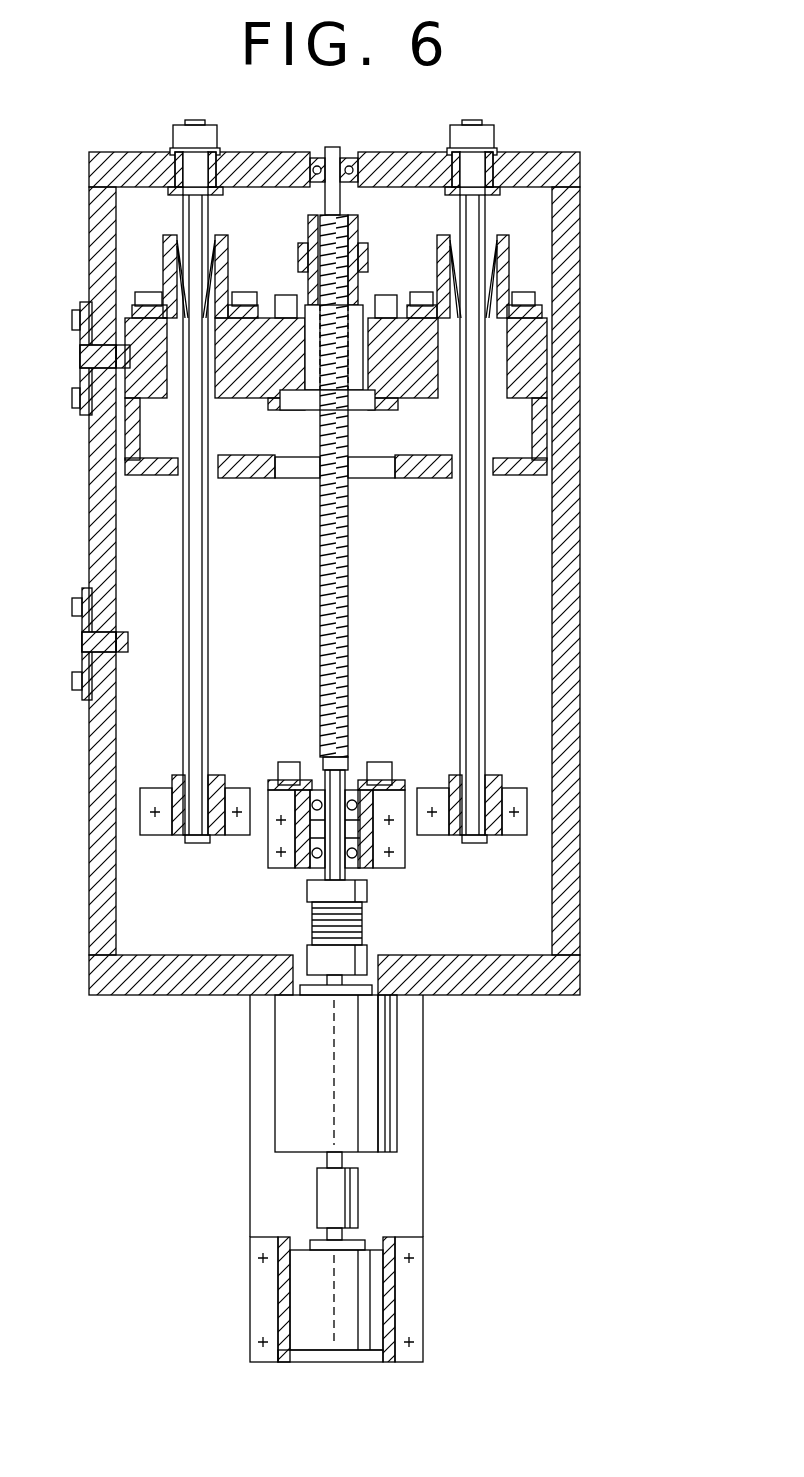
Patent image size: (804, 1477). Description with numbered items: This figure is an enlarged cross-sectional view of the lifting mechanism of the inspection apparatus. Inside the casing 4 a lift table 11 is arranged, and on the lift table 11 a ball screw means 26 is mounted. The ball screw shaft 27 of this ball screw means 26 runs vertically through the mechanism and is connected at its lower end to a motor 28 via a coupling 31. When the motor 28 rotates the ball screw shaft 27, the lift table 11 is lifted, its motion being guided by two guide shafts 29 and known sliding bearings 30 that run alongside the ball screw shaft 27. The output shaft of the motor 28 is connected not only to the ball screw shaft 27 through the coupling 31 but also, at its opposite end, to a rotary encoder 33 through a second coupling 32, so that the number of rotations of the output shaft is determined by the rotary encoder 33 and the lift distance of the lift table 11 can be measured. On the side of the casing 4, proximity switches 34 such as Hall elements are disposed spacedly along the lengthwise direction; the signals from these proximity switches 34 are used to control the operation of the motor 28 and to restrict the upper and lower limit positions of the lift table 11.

The casing 4 is at (90, 768).
The lift table 11 is at (535, 353).
The ball screw means 26 is at (343, 385).
The ball screw shaft 27 is at (320, 545).
The motor 28 is at (397, 1075).
The guide shaft 29 is at (207, 656).
The sliding bearing 30 is at (163, 262).
The coupling 31 is at (307, 922).
The coupling 32 is at (358, 1192).
The rotary encoder 33 is at (370, 1293).
The proximity switch 34 is at (80, 353).